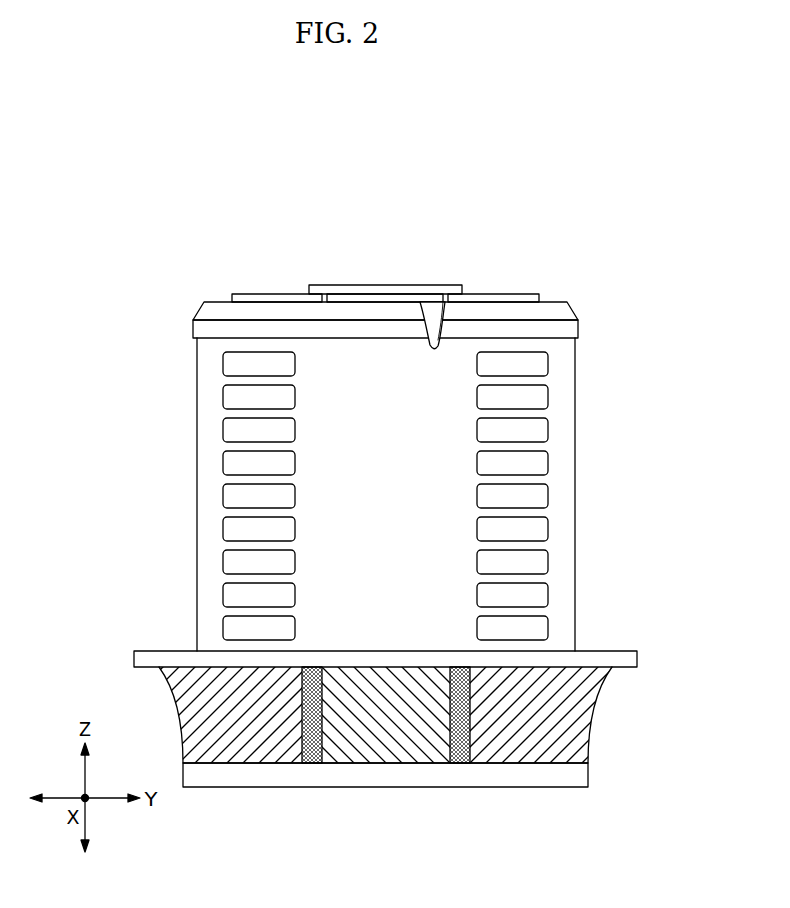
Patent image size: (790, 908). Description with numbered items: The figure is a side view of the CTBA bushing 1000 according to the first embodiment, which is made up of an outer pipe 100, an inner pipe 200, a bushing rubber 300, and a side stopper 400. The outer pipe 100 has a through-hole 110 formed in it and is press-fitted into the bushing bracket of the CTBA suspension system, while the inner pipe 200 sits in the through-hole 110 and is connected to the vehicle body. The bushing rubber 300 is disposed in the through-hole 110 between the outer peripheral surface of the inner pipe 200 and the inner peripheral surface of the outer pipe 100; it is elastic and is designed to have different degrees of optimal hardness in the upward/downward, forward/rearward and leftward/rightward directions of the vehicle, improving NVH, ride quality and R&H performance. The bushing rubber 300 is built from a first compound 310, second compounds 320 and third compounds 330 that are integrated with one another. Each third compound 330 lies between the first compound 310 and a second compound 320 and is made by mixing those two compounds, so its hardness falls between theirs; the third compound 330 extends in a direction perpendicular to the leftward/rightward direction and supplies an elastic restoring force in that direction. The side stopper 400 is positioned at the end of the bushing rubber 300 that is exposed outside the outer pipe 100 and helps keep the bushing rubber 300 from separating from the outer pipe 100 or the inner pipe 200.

The CTBA bushing 1000 is at (371, 198).
The outer pipe 100 is at (439, 433).
The through-hole 110 is at (408, 490).
The inner pipe 200 is at (386, 285).
The bushing rubber 300 is at (233, 840).
The first compound 310 is at (390, 750).
The second compound 320 is at (244, 750).
The third compound 330 is at (311, 750).
The side stopper 400 is at (576, 775).